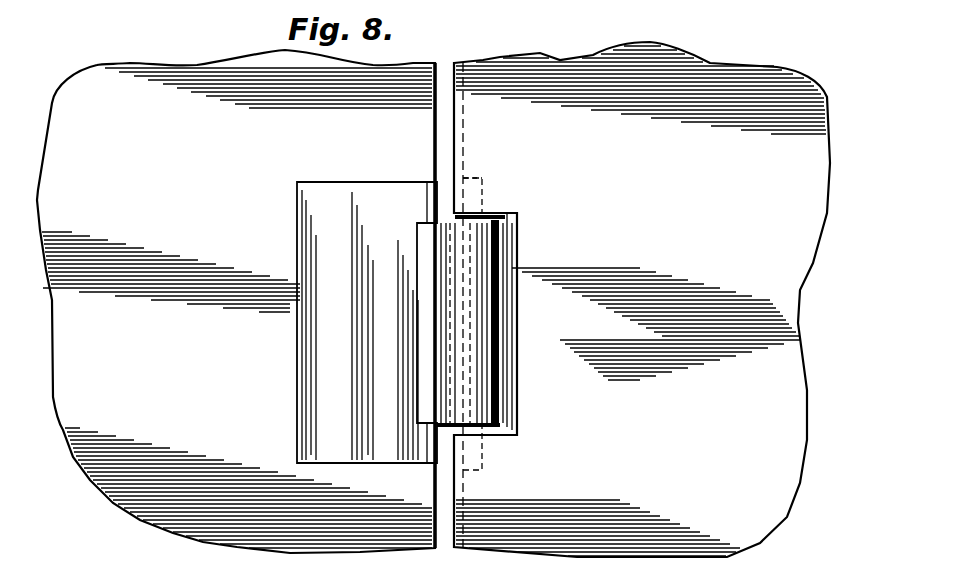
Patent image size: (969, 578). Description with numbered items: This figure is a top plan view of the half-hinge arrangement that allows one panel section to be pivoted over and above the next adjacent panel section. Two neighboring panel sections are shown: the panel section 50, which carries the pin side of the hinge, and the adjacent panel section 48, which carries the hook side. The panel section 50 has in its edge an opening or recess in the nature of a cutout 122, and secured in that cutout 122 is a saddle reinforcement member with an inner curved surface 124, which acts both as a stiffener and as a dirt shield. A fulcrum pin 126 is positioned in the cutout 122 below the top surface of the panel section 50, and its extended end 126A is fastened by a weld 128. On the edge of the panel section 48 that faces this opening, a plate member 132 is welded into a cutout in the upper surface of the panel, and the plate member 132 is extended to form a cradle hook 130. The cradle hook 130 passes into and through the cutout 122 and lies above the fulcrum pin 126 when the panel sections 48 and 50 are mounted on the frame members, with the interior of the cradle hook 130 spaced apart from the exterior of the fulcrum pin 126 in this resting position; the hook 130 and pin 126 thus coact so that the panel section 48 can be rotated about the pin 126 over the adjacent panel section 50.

The panel section 48 is at (161, 193).
The panel section 50 is at (710, 257).
The cutout 122 is at (506, 214).
The saddle reinforcement member with inner curved surface 124 is at (512, 254).
The fulcrum pin 126 is at (485, 430).
The extended end of fulcrum pin 126A is at (484, 194).
The weld 128 is at (466, 178).
The cradle hook 130 is at (486, 322).
The plate member 132 is at (312, 374).